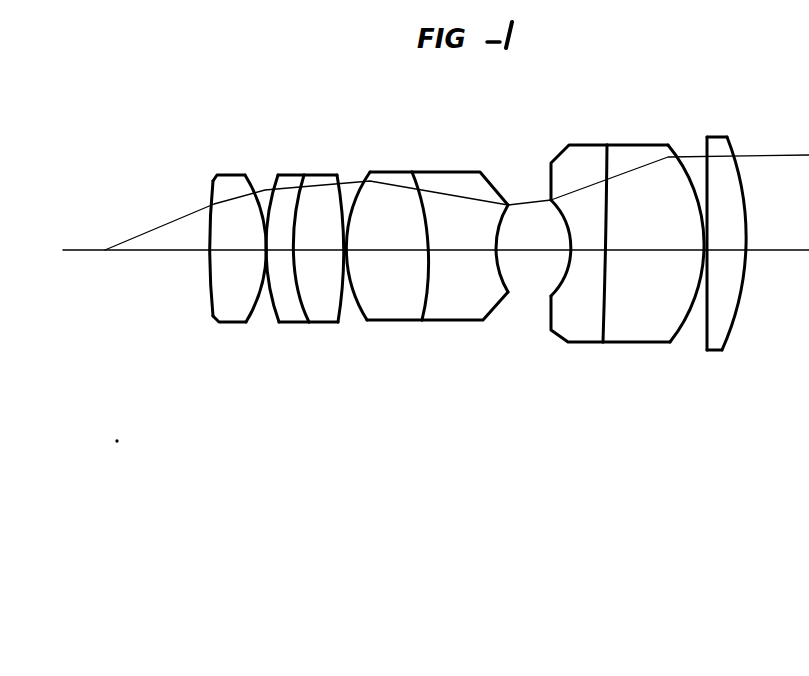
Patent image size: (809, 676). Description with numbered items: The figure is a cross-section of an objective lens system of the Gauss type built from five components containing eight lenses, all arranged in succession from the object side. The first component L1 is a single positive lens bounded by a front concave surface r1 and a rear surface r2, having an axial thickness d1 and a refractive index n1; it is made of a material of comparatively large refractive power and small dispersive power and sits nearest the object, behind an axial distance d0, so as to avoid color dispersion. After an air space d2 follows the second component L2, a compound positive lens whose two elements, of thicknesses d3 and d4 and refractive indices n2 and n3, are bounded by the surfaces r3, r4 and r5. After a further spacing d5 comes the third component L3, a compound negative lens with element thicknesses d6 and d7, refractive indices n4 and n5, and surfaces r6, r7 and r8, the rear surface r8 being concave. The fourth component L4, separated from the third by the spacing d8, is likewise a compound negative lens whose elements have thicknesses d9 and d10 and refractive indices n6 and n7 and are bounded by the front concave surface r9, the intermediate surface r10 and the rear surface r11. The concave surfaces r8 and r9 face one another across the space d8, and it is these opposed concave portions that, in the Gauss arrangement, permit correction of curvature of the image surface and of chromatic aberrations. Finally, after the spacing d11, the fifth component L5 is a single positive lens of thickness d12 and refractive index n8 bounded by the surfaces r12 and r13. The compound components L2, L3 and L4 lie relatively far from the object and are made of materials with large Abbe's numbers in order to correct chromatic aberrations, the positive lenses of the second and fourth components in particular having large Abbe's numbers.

The first component L1 is at (237, 172).
The second component L2 is at (298, 172).
The third component L3 is at (412, 170).
The fourth component L4 is at (598, 145).
The fifth component L5 is at (722, 146).
The refractive index of first component lens n1 is at (222, 188).
The refractive index of first lens of second component n2 is at (287, 175).
The refractive index of second lens of second component n3 is at (322, 176).
The refractive index of first lens of third component n4 is at (378, 178).
The refractive index of second lens of third component n5 is at (448, 178).
The refractive index of first lens of fourth component n6 is at (563, 170).
The refractive index of second lens of fourth component n7 is at (638, 158).
The refractive index of fifth component lens n8 is at (722, 178).
The axial distance in front of first component d0 is at (163, 240).
The axial thickness of first component d1 is at (279, 250).
The axial spacing between first and second components d2 is at (263, 262).
The axial thickness of first lens of second component d3 is at (264, 253).
The axial thickness of second lens of second component d4 is at (320, 245).
The axial spacing between second and third components d5 is at (340, 337).
The axial thickness of first lens of third component d6 is at (384, 247).
The axial thickness of second lens of third component d7 is at (454, 247).
The axial spacing between third and fourth components d8 is at (523, 247).
The axial thickness of first lens of fourth component d9 is at (580, 246).
The axial thickness of second lens of fourth component d10 is at (638, 247).
The axial spacing between fourth and fifth components d11 is at (687, 300).
The axial thickness of fifth component d12 is at (725, 248).
The front concave surface of first component r1 is at (212, 306).
The rear surface of first component r2 is at (256, 312).
The front surface of second component r3 is at (268, 325).
The intermediate surface of second component r4 is at (307, 316).
The rear surface of second component r5 is at (350, 312).
The front surface of third component r6 is at (362, 322).
The intermediate surface of third component r7 is at (423, 312).
The rear concave surface of third component r8 is at (511, 291).
The front concave surface of fourth component r9 is at (552, 292).
The intermediate surface of fourth component r10 is at (604, 336).
The rear surface of fourth component r11 is at (680, 340).
The front surface of fifth component r12 is at (703, 343).
The rear surface of fifth component r13 is at (734, 320).